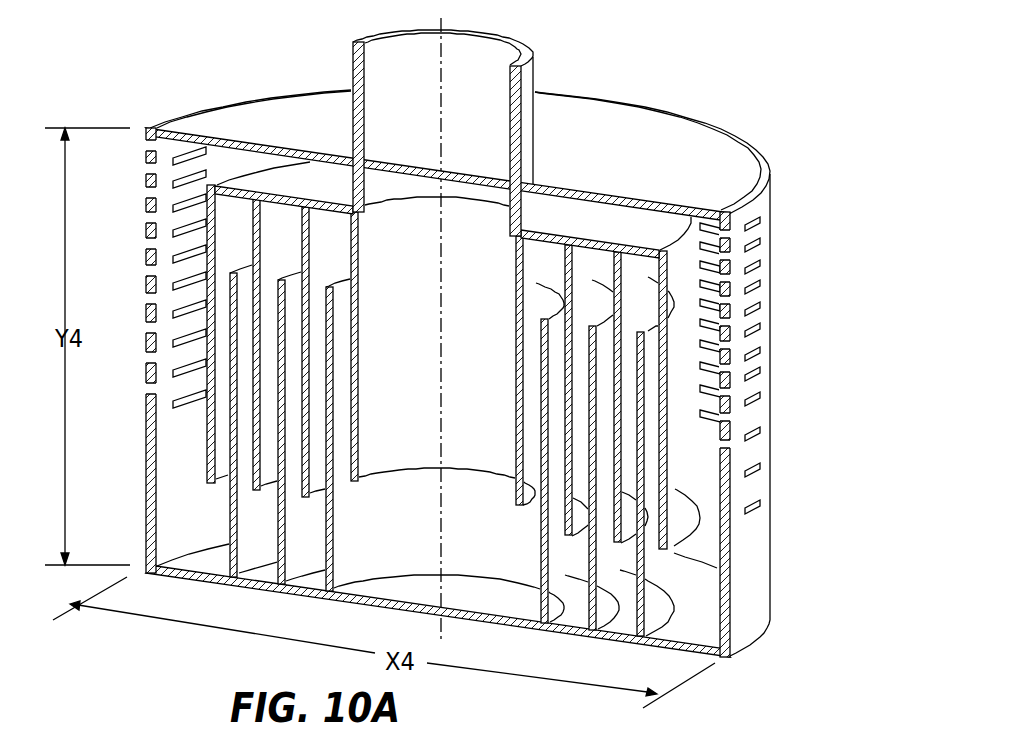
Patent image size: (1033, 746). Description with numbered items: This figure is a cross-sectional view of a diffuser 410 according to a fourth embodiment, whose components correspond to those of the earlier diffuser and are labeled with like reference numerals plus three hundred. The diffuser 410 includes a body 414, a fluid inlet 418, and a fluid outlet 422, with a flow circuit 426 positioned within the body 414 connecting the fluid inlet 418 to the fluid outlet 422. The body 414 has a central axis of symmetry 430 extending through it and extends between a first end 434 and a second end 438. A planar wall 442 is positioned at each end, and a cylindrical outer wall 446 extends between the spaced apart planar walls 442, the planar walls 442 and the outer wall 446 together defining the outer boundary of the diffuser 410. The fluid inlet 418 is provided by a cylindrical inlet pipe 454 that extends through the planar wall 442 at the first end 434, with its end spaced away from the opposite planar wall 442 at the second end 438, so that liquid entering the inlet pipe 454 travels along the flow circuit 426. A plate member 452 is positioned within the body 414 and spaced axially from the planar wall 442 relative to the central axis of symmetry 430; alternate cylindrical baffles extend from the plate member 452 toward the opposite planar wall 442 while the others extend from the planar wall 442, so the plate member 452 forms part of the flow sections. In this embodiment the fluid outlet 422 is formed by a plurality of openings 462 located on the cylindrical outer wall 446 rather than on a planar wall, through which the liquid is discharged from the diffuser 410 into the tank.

The diffuser 410 is at (724, 46).
The inlet pipe 454 is at (350, 107).
The central axis of symmetry 430 is at (440, 168).
The plate member 452 is at (578, 225).
The planar wall 442 is at (727, 162).
The first end 434 is at (763, 178).
The openings 462 is at (757, 300).
The fluid outlet 422 is at (506, 392).
The body 414 is at (768, 520).
The cylindrical outer wall 446 is at (748, 556).
The second end 438 is at (757, 636).
The flow circuit 426 is at (690, 618).
The fluid inlet 418 is at (386, 437).